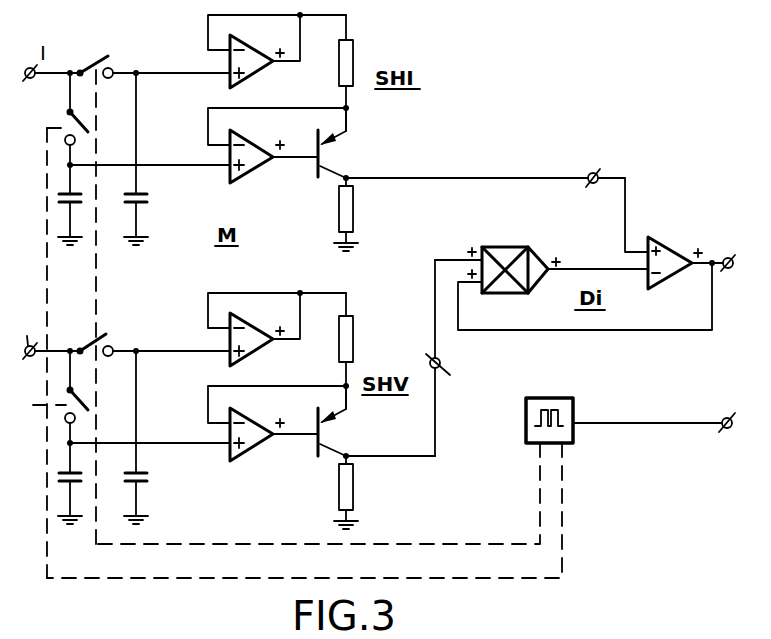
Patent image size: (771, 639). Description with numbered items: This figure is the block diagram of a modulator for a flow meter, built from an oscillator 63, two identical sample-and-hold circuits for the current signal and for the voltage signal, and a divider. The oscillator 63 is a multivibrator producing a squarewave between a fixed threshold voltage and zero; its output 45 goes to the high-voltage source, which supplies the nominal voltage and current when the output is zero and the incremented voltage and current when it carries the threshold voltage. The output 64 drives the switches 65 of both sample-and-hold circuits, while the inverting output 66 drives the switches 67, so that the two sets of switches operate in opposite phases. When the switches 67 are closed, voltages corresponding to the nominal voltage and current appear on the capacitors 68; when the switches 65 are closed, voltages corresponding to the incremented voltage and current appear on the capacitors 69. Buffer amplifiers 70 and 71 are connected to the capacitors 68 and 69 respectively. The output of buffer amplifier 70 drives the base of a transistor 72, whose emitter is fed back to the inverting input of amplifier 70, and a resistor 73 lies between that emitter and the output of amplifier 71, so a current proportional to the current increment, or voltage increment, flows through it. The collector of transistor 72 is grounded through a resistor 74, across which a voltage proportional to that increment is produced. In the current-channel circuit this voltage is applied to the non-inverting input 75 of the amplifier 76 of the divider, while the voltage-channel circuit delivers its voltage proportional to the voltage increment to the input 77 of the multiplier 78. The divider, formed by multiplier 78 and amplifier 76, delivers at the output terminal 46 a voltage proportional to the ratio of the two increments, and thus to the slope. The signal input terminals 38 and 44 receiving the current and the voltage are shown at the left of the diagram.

The current input terminal I 38 is at (28, 67).
The voltage input terminal V 44 is at (48, 350).
The output 45 is at (724, 433).
The output terminal 46 is at (729, 272).
The oscillator 63 is at (573, 398).
The output 64 is at (536, 445).
The switches 65 is at (97, 55).
The inverting output 66 is at (560, 445).
The switches 67 is at (66, 112).
The capacitors 68 is at (62, 208).
The capacitors 69 is at (146, 193).
The buffer amplifier 70 is at (252, 168).
The buffer amplifier 71 is at (256, 53).
The transistor 72 is at (322, 157).
The resistor 73 is at (353, 60).
The resistor 74 is at (353, 215).
The non-inverting input 75 is at (598, 171).
The amplifier 76 is at (669, 253).
The input 77 is at (451, 369).
The multiplier 78 is at (510, 246).